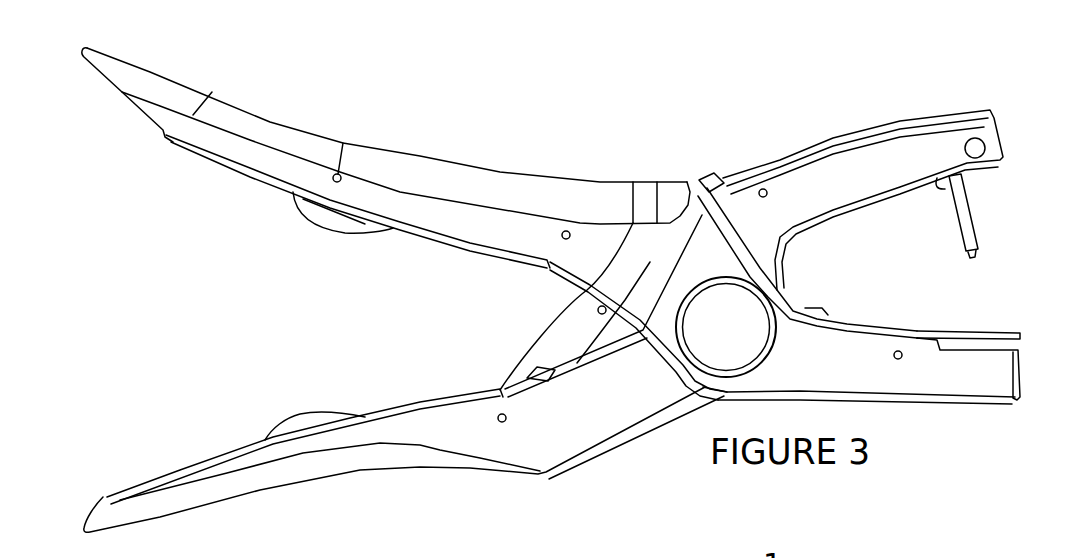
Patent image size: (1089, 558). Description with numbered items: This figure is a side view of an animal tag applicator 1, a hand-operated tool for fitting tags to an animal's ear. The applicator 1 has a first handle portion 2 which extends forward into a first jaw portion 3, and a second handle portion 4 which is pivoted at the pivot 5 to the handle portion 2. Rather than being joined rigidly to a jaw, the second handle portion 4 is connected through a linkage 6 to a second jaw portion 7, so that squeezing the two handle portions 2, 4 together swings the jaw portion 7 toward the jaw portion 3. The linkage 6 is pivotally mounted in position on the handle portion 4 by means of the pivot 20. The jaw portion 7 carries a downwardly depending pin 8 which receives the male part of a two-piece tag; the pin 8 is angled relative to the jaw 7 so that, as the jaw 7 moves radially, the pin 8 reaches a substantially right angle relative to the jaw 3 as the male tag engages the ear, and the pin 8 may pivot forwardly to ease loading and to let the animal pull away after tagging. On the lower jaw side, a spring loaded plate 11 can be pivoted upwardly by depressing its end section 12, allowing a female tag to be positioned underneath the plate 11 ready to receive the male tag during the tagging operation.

The animal tag applicator 1 is at (464, 129).
The first handle portion 2 is at (247, 122).
The first jaw portion 3 is at (920, 398).
The second handle portion 4 is at (303, 463).
The pivot 5 is at (726, 327).
The linkage 6 is at (561, 347).
The second jaw portion 7 is at (857, 167).
The pin 8 is at (970, 210).
The spring loaded plate 11 is at (982, 330).
The end section 12 is at (823, 309).
The pivot 20 is at (507, 418).